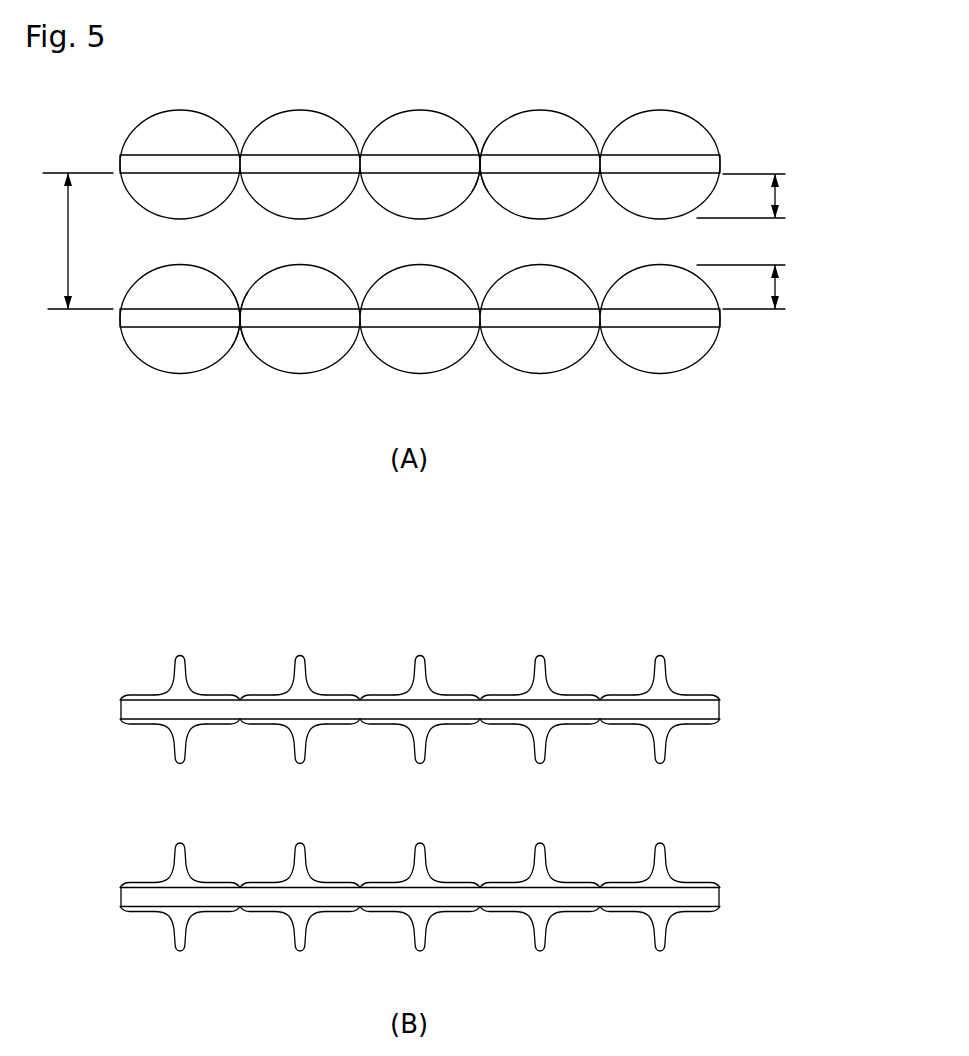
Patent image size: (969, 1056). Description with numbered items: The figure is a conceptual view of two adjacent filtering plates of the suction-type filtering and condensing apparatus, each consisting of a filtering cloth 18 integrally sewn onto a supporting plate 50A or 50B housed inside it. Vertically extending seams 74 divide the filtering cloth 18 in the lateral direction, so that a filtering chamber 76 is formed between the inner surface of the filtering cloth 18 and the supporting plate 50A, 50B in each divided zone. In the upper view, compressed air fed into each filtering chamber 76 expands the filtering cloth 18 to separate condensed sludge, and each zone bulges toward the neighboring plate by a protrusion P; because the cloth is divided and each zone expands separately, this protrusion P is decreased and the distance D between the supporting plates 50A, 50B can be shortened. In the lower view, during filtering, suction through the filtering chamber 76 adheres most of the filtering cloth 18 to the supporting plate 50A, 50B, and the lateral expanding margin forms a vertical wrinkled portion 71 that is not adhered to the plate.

The filtering cloth 18 is at (382, 526).
The supporting plate 50A is at (151, 170).
The supporting plate 50B is at (130, 318).
The wrinkled portion 71 is at (182, 672).
The seam 74 is at (478, 138).
The filtering chamber 76 is at (167, 140).
The distance D is at (78, 241).
The protrusion P is at (749, 241).